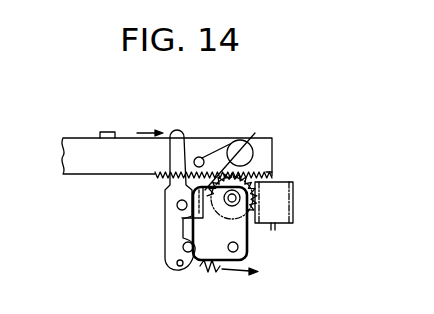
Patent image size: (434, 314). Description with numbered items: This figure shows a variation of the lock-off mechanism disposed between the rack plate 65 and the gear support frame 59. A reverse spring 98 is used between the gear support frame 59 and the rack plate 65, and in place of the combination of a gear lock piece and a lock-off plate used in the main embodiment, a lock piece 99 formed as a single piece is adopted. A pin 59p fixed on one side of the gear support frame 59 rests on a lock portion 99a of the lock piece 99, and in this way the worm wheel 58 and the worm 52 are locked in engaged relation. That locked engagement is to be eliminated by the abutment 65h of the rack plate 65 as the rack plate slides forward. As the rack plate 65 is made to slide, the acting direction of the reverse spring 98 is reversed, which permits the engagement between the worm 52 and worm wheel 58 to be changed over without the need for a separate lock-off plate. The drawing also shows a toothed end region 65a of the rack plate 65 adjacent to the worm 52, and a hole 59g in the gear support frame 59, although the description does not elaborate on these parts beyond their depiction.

The rack plate 65 is at (83, 153).
The abutment 65h is at (108, 132).
The worm wheel 58 is at (240, 183).
The reverse spring 98 is at (255, 133).
The toothed end portion of rack 65a is at (273, 173).
The worm 52 is at (294, 198).
The lock piece 99 is at (167, 218).
The pin 59p is at (182, 247).
The lock portion 99a is at (177, 263).
The gear support frame 59 is at (217, 253).
The hole 59g is at (238, 247).